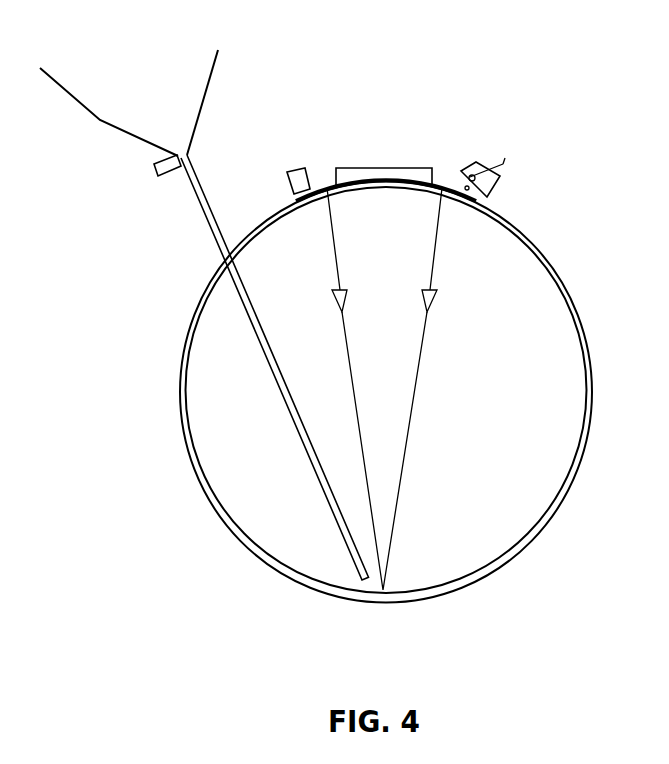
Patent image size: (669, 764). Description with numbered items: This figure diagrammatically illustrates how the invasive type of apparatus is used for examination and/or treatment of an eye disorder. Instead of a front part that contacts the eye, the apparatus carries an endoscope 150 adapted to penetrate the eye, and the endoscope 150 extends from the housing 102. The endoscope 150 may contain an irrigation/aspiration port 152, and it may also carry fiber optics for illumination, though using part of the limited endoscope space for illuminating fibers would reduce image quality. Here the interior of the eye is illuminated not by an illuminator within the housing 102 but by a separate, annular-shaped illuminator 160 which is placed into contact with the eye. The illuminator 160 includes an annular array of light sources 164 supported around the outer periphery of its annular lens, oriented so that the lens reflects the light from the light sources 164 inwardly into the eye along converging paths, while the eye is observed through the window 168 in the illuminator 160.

The housing 102 is at (212, 78).
The endoscope 150 is at (290, 405).
The irrigation/aspiration port 152 is at (168, 176).
The illuminator 160 is at (430, 165).
The light sources 164 is at (297, 170).
The window 168 is at (397, 173).